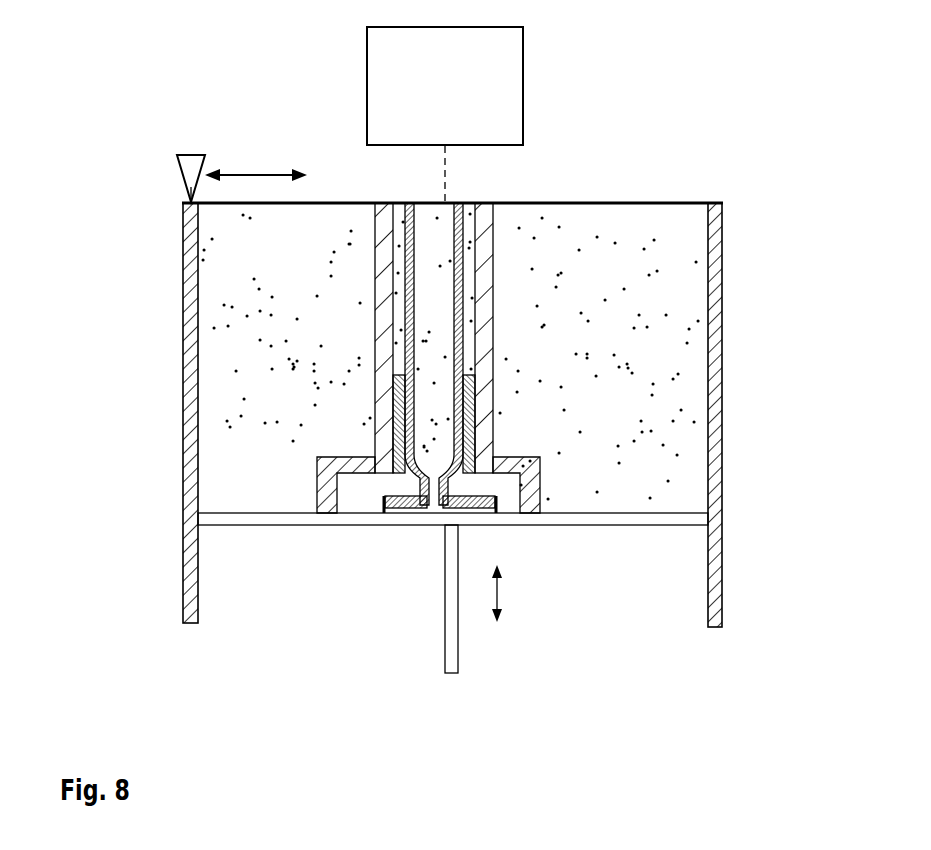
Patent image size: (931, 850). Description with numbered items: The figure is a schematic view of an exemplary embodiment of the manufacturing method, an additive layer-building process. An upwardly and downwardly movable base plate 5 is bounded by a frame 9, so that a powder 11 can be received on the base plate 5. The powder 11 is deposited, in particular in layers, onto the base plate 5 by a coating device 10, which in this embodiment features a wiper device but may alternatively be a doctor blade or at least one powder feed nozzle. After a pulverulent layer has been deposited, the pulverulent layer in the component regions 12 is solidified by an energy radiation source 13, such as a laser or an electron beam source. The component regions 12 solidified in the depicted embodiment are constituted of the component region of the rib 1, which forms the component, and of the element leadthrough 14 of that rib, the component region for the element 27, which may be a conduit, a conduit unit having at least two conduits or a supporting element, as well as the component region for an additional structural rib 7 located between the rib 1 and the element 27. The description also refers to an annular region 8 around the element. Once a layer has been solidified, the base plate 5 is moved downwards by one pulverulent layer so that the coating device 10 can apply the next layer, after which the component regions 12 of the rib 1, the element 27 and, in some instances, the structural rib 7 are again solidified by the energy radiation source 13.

The rib 1 is at (327, 478).
The base plate 5 is at (632, 526).
The structural rib 7 is at (398, 430).
The annular channel 8 is at (400, 272).
The frame 9 is at (740, 253).
The coating device 10 is at (193, 155).
The powder 11 is at (683, 342).
The component regions 12 is at (375, 202).
The energy radiation source 13 is at (445, 114).
The element leadthrough 14 is at (490, 268).
The element 27 is at (407, 358).